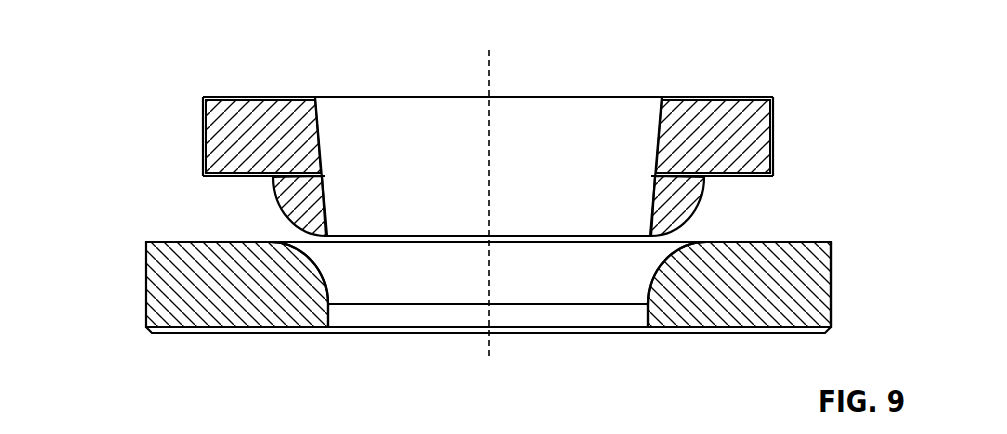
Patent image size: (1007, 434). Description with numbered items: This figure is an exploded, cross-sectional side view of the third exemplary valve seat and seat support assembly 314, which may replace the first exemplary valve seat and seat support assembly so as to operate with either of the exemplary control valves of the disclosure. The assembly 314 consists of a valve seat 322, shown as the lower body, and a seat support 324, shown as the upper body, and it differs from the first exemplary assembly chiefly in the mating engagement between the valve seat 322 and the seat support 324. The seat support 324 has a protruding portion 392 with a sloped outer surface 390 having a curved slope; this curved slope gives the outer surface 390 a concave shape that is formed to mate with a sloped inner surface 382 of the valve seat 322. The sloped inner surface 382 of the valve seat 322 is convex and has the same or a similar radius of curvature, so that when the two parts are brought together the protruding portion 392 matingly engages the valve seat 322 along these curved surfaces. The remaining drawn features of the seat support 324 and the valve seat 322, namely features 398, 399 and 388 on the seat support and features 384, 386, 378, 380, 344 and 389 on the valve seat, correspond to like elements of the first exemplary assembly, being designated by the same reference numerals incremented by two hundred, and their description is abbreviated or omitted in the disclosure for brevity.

The valve seat and seat support assembly 314 is at (140, 55).
The seat support 324 is at (762, 115).
The valve seat 322 is at (815, 277).
The top layer of upper body 398 is at (238, 98).
The bottom layer of upper body 399 is at (212, 182).
The side wall of upper body 388 is at (762, 152).
The sloped outer surface 390 is at (277, 202).
The protruding portion 392 is at (703, 190).
The sloped inner surface 382 is at (702, 292).
The top surface of lower body 384 is at (160, 242).
The bottom surface of lower body 386 is at (167, 335).
The side wall of lower body 378 is at (833, 315).
The recess 380 is at (613, 282).
The floor of recess 344 is at (357, 313).
The bottom layer of lower body 389 is at (438, 328).